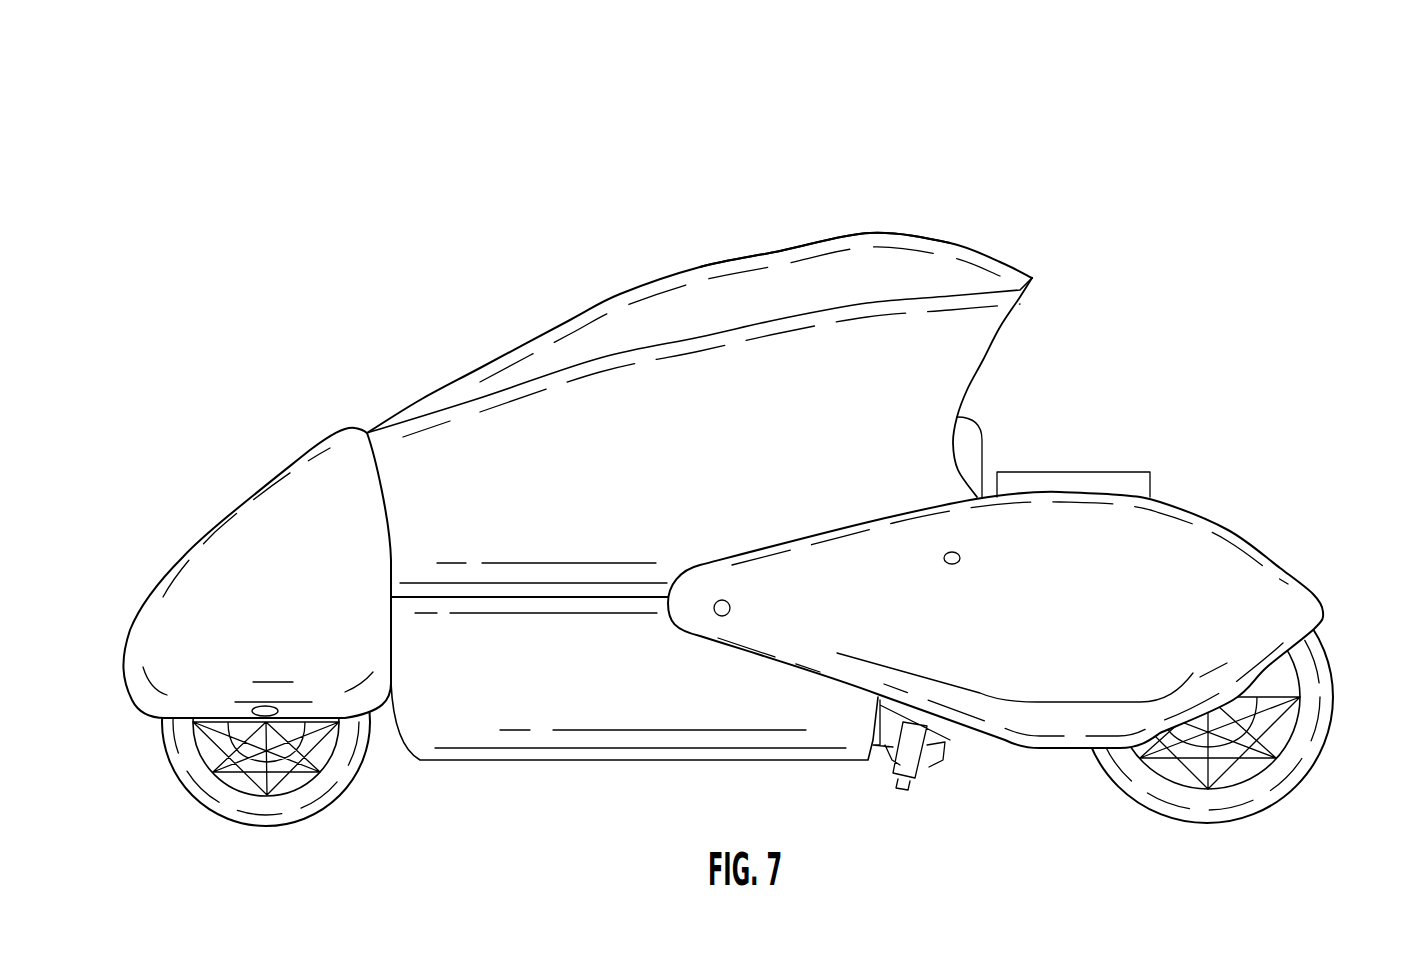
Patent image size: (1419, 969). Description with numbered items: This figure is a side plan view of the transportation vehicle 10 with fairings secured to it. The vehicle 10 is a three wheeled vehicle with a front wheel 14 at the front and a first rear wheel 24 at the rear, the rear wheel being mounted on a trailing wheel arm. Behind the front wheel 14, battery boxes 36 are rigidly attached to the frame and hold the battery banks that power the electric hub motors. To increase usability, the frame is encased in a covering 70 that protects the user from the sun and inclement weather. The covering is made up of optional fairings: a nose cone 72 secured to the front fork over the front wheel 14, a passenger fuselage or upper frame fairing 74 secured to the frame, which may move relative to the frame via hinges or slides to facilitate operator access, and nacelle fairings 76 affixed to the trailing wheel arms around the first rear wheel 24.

The transportation vehicle 10 is at (768, 448).
The front wheel 14 is at (320, 793).
The first rear wheel 24 is at (1336, 700).
The battery boxes 36 is at (598, 762).
The covering 70 is at (765, 147).
The nose cone 72 is at (272, 480).
The upper frame fairing 74 is at (507, 348).
The nacelle fairings 76 is at (1228, 530).